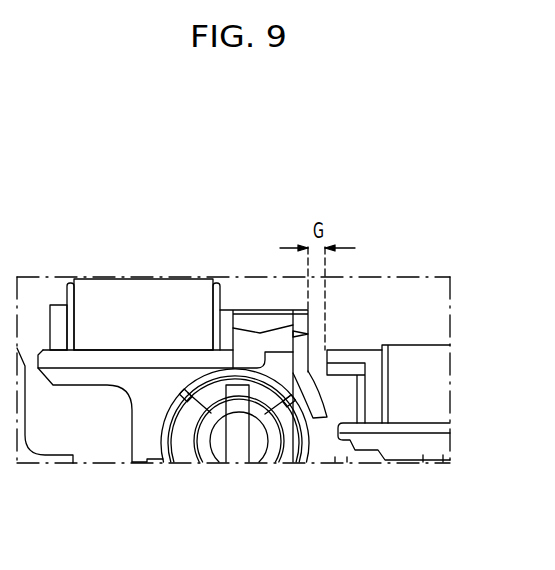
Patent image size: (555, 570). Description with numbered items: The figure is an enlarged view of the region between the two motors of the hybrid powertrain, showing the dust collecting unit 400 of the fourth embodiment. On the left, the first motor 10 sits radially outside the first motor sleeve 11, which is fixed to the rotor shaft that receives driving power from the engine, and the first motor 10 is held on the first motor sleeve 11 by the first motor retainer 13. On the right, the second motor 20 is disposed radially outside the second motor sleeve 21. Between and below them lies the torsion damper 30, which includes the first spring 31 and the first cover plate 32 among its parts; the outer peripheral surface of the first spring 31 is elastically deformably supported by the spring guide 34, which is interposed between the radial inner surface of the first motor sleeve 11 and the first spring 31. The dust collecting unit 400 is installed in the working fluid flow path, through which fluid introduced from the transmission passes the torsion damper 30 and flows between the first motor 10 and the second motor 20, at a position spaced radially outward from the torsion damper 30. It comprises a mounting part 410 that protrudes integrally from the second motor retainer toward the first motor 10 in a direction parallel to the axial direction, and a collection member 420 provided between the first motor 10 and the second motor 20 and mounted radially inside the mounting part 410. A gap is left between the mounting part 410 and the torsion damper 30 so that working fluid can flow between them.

The first motor 10 is at (190, 292).
The first motor sleeve 11 is at (120, 360).
The first motor retainer 13 is at (55, 308).
The second motor 20 is at (419, 359).
The second motor sleeve 21 is at (413, 430).
The torsion damper 30 is at (306, 460).
The first spring 31 is at (238, 452).
The first cover plate 32 is at (290, 452).
The spring guide 34 is at (176, 392).
The dust collecting unit 400 is at (389, 304).
The mounting part 410 is at (342, 357).
The collection member 420 is at (352, 365).